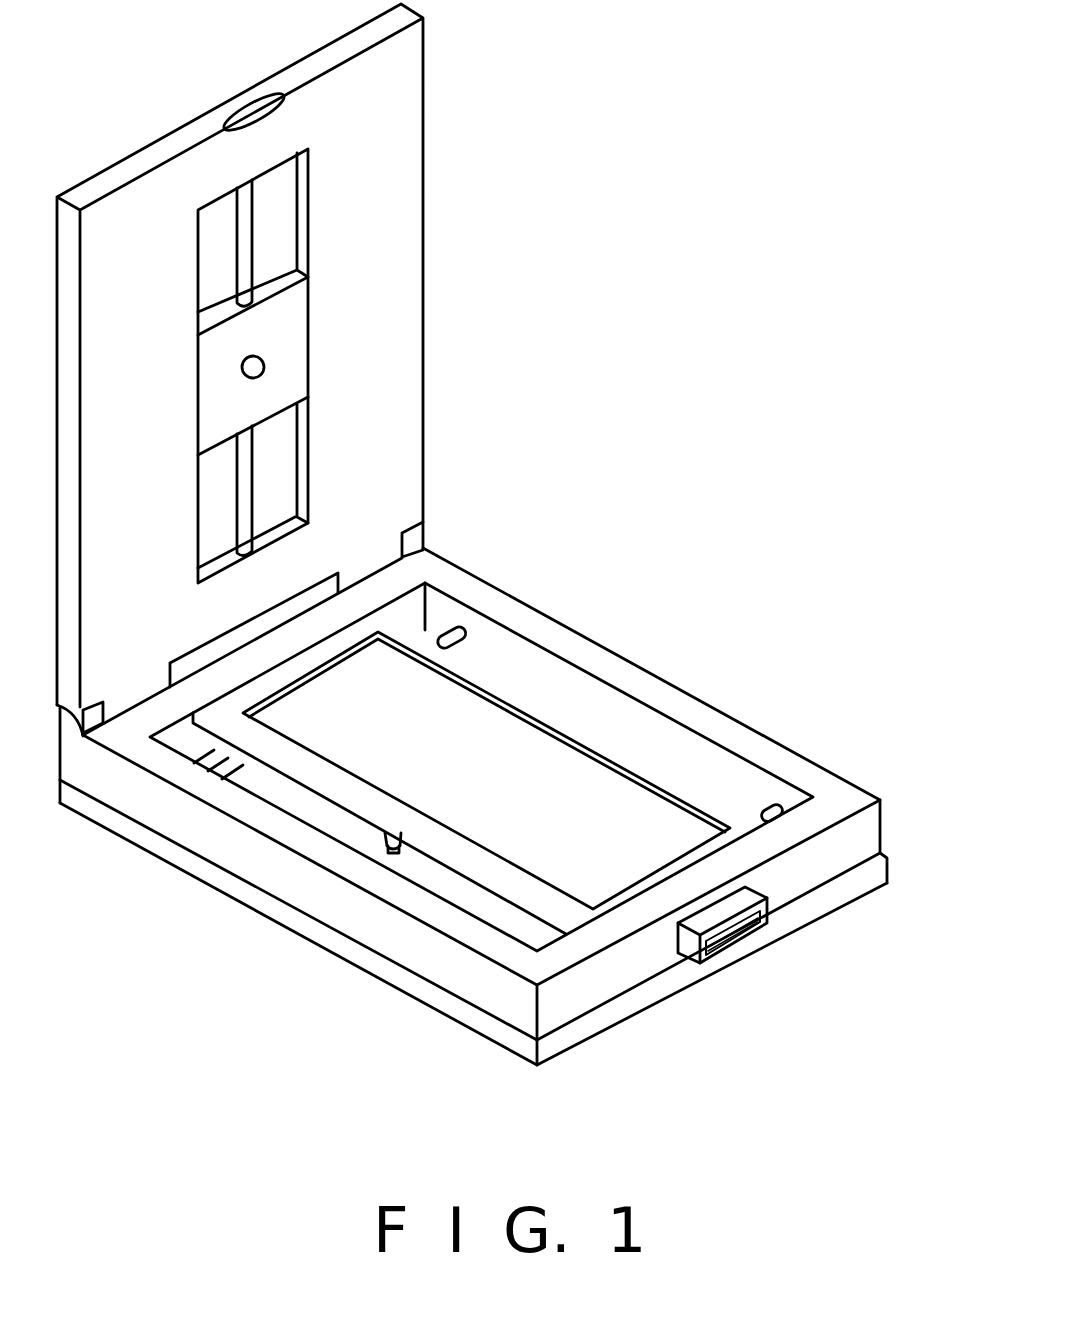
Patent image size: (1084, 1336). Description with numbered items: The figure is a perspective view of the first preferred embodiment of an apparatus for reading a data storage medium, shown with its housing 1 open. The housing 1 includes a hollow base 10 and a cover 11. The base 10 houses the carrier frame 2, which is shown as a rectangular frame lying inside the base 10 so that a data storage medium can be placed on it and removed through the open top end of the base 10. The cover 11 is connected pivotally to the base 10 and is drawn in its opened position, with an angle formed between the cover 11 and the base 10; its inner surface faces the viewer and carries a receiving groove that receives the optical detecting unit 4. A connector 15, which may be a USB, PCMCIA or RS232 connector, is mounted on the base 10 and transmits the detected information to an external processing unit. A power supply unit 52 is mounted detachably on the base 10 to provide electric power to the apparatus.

The housing 1 is at (506, 534).
The carrier frame 2 is at (700, 800).
The optical detecting unit 4 is at (256, 364).
The base 10 is at (508, 777).
The cover 11 is at (279, 370).
The connector 15 is at (740, 900).
The power supply unit 52 is at (338, 942).